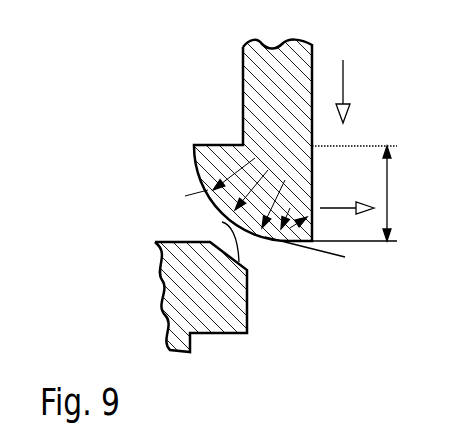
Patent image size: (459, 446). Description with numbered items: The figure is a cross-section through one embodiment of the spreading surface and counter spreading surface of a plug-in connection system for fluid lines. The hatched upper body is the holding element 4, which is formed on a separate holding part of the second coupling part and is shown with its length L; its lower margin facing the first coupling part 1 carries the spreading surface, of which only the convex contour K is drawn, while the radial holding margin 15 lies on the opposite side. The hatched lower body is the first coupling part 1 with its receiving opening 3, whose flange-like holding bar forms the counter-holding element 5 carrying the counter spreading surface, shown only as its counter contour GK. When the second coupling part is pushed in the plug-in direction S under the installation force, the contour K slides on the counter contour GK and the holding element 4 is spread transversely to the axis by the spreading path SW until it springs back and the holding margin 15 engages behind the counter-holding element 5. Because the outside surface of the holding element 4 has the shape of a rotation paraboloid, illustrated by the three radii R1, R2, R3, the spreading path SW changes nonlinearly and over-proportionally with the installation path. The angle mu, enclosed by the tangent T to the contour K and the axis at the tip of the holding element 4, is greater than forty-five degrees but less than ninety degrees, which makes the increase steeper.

The holding element 4 is at (265, 100).
The first coupling part 1 is at (170, 304).
The counter-holding element 5 is at (222, 318).
The receiving opening 3 is at (323, 378).
The radial holding margin 15 is at (205, 145).
The first radius R1 is at (282, 196).
The second radius R2 is at (207, 177).
The third radius R3 is at (225, 148).
The contour of the spreading surface K is at (195, 185).
The counter contour of the counter spreading surface GK is at (222, 222).
The plug-in direction S is at (343, 86).
The length of the holding element L is at (390, 193).
The spreading path SW is at (340, 210).
The angle mu is at (290, 241).
The tangent to the contour T is at (332, 257).